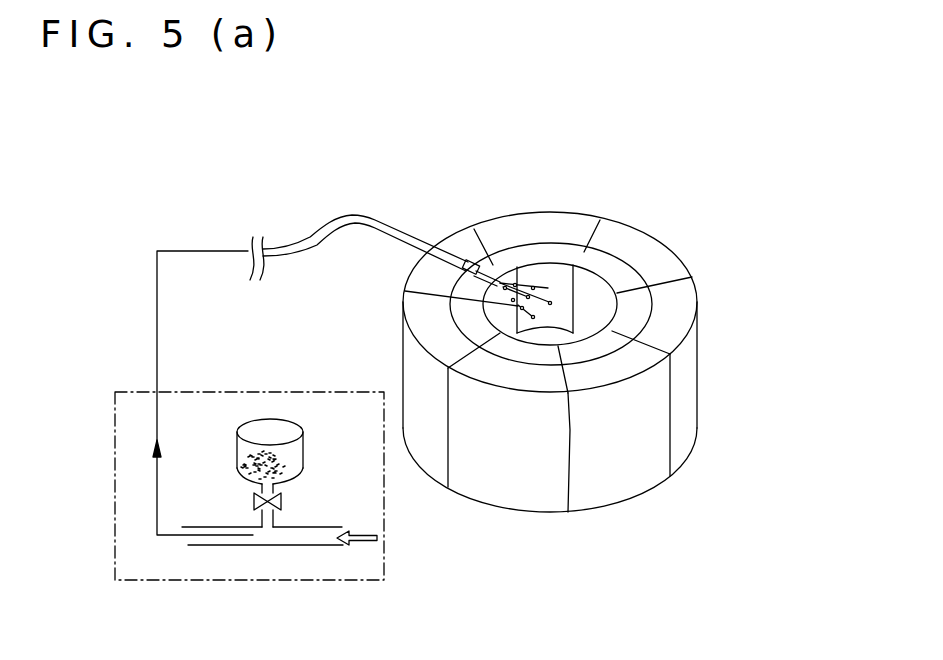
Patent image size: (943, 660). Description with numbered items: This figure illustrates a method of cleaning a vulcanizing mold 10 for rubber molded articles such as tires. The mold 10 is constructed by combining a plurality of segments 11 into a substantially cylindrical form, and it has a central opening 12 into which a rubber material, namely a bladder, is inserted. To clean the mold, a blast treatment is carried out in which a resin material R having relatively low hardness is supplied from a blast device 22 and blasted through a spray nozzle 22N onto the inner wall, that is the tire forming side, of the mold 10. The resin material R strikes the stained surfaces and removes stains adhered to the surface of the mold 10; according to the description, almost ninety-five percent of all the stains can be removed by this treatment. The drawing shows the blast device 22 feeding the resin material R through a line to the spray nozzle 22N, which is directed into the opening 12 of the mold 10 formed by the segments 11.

The vulcanizing mold 10 is at (603, 303).
The segment 11 is at (647, 253).
The opening 12 is at (563, 273).
The blast device 22 is at (213, 402).
The spray nozzle 22N is at (458, 250).
The resin material R is at (533, 288).